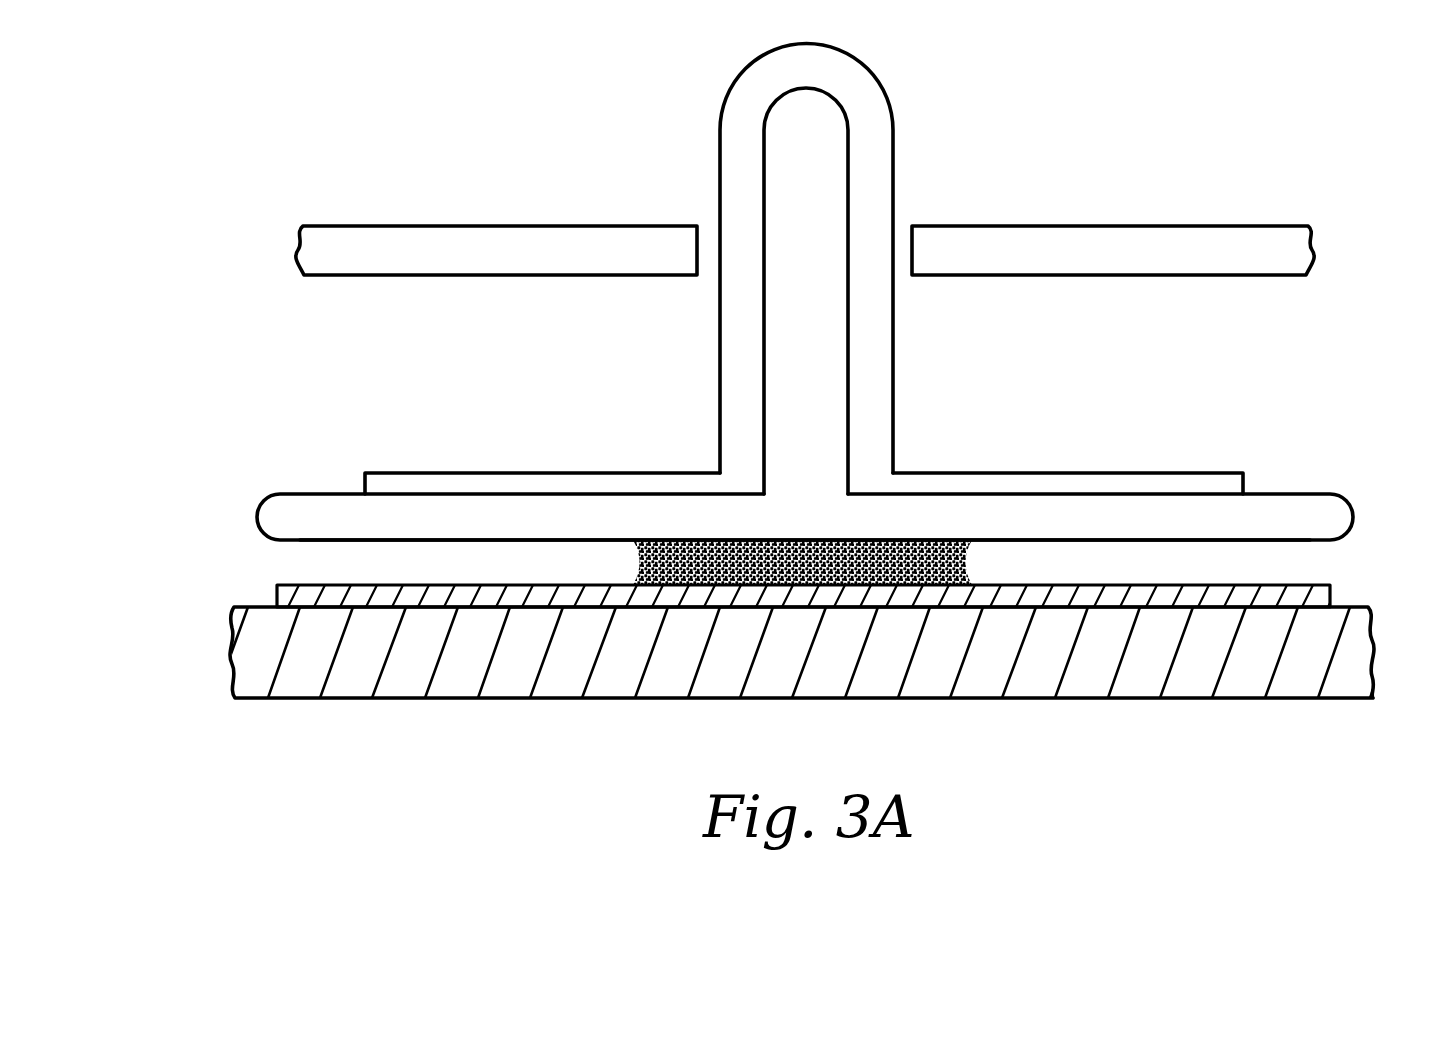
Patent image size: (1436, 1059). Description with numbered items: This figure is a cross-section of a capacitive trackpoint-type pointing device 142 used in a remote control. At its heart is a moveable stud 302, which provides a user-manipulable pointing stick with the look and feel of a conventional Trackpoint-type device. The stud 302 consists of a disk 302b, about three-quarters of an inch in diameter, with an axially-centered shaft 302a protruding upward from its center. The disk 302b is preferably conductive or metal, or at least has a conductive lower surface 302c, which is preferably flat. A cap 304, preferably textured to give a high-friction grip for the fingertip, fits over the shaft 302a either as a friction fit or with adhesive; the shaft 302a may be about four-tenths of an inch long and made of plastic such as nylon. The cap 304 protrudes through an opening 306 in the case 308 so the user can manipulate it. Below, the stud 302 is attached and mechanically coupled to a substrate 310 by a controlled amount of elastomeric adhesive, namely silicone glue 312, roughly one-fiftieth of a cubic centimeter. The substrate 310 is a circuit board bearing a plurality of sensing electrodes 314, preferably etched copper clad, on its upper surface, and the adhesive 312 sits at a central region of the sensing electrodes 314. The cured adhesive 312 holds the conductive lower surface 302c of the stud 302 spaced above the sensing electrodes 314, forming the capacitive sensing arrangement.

The pointing device 142 is at (568, 423).
The moveable stud 302 is at (840, 523).
The shaft 302a is at (848, 196).
The disk 302b is at (1290, 494).
The conductive lower surface 302c is at (1300, 541).
The cap 304 is at (893, 108).
The opening 306 is at (920, 290).
The case 308 is at (389, 226).
The substrate 310 is at (544, 698).
The silicone glue 312 is at (973, 575).
The sensing electrodes 314 is at (277, 586).